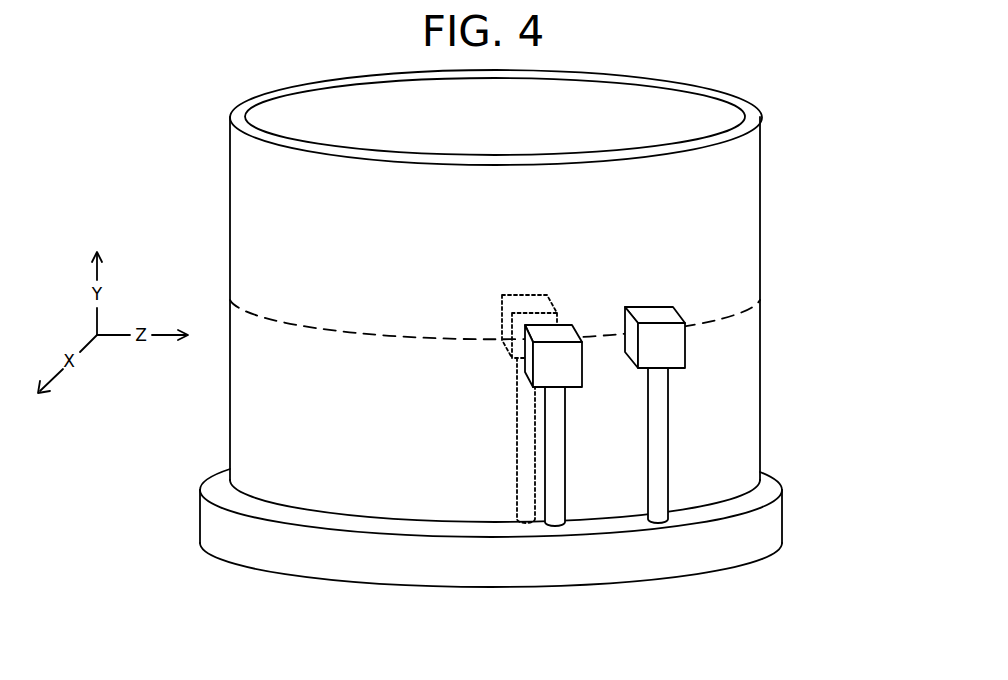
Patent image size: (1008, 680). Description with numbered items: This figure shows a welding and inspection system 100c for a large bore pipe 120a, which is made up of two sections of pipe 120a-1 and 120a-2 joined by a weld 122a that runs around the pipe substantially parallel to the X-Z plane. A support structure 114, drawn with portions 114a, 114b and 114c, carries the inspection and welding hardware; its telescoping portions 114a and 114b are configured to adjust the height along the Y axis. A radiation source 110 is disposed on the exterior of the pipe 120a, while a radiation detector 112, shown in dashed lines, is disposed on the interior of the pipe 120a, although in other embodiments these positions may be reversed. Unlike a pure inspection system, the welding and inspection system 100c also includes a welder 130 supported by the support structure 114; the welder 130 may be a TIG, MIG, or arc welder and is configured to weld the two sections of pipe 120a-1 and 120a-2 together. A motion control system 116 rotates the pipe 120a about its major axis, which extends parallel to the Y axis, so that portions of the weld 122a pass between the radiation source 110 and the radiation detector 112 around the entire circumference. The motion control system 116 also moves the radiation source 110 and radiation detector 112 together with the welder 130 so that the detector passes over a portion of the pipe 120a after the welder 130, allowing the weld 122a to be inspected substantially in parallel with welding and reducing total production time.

The welding and inspection system 100c is at (503, 364).
The radiation source 110 is at (529, 378).
The radiation detector 112 is at (502, 313).
The support structure 114 is at (453, 556).
The telescoping portion 114a is at (545, 477).
The telescoping portion 114b is at (515, 438).
The third support post 114c is at (668, 408).
The motion control system 116 is at (233, 495).
The large bore pipe 120a is at (508, 296).
The section of pipe 120a-1 is at (760, 222).
The section of pipe 120a-2 is at (760, 453).
The weld 122a is at (352, 334).
The welder 130 is at (686, 350).